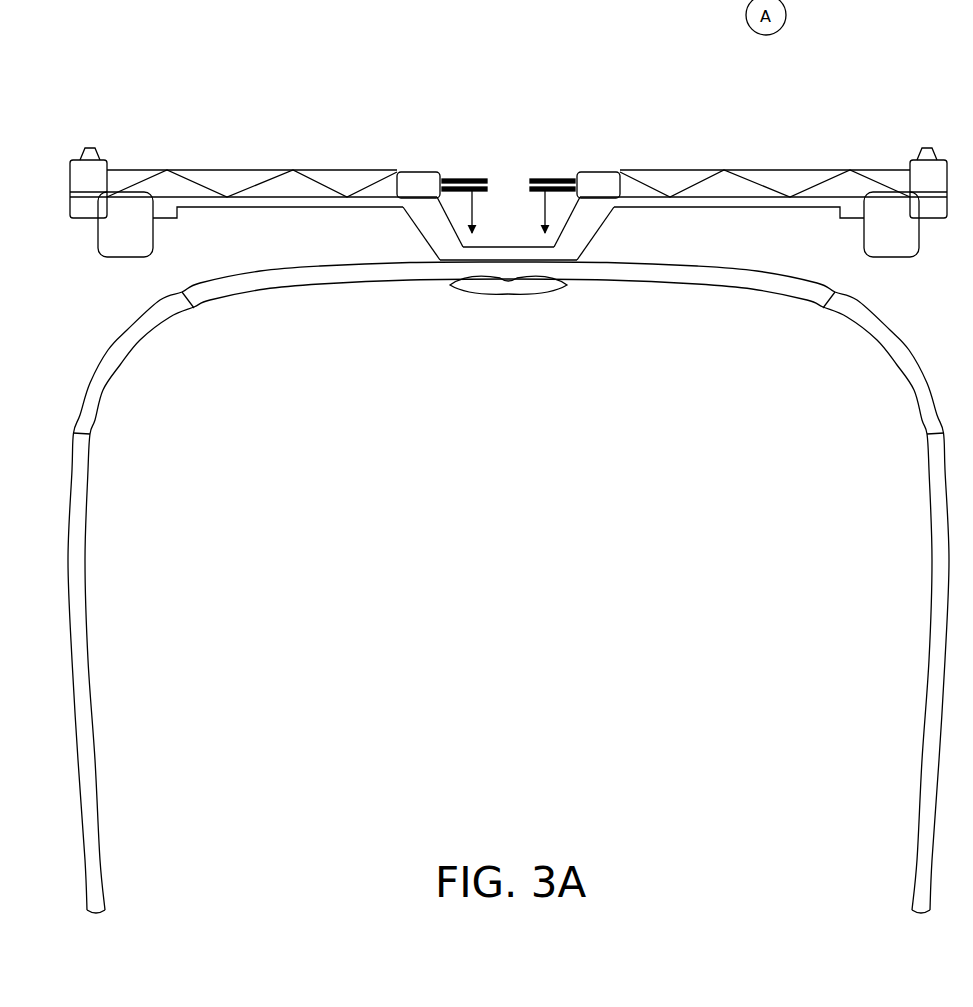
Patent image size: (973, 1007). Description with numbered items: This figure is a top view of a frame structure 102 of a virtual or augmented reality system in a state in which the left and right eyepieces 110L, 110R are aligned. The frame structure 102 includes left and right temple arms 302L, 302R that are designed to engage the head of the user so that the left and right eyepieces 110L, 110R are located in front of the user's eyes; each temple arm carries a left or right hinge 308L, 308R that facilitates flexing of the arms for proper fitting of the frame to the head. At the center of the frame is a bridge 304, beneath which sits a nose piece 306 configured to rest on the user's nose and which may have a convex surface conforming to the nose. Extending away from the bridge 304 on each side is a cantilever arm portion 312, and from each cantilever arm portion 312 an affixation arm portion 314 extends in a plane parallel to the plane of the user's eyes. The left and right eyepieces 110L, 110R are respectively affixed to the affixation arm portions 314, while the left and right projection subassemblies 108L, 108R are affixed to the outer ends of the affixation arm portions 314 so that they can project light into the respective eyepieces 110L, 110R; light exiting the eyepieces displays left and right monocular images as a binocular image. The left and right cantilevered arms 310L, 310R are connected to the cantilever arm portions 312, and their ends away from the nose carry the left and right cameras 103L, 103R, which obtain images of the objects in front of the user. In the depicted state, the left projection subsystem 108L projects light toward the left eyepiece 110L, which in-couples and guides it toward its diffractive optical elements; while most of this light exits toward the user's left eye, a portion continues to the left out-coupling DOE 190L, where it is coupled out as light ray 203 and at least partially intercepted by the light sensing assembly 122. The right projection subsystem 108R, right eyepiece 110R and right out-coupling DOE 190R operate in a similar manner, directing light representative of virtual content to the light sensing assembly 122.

The frame structure 102 is at (229, 313).
The left camera 103L is at (90, 147).
The right camera 103R is at (927, 147).
The left projection subassembly 108L is at (121, 252).
The right projection subassembly 108R is at (896, 252).
The left eyepiece 110L is at (224, 170).
The right eyepiece 110R is at (769, 170).
The light sensing assembly 122 is at (527, 252).
The left out-coupling DOE 190L is at (473, 179).
The right out-coupling DOE 190R is at (543, 179).
The light ray 203 is at (545, 210).
The left temple arm 302L is at (88, 628).
The right temple arm 302R is at (930, 628).
The bridge 304 is at (452, 270).
The nose piece 306 is at (480, 290).
The left hinge 308L is at (122, 357).
The right hinge 308R is at (895, 362).
The left cantilevered arm 310L is at (400, 172).
The right cantilevered arm 310R is at (617, 172).
The cantilever arm portion 312 is at (426, 243).
The affixation arm portion 314 is at (226, 200).